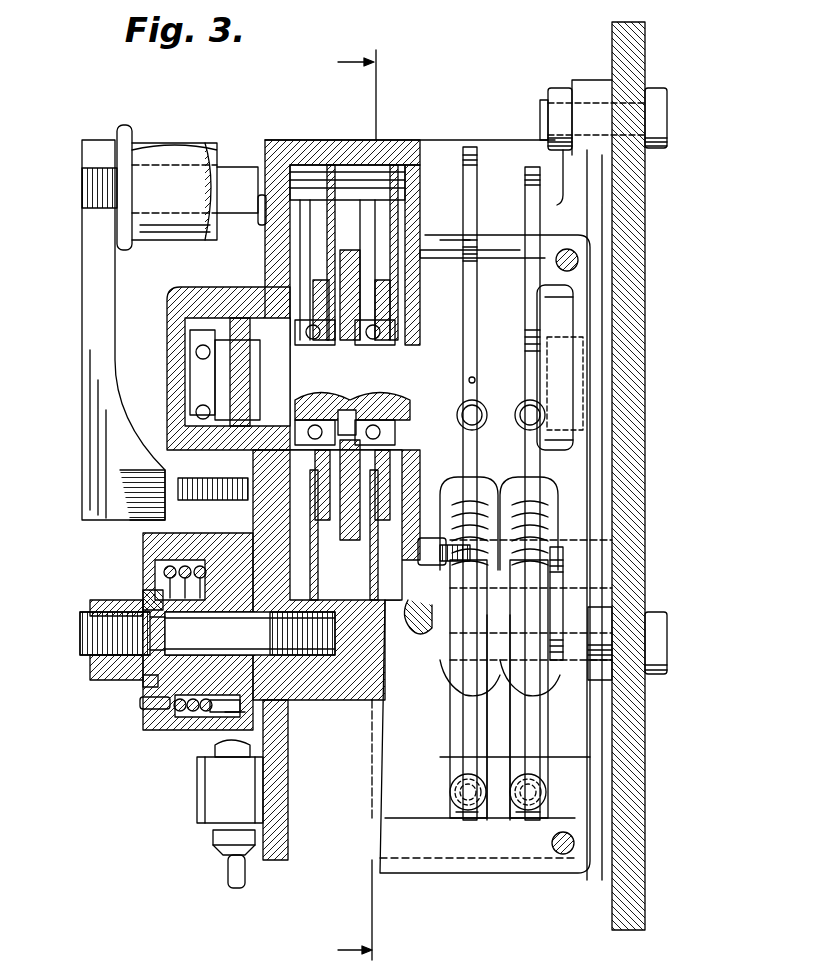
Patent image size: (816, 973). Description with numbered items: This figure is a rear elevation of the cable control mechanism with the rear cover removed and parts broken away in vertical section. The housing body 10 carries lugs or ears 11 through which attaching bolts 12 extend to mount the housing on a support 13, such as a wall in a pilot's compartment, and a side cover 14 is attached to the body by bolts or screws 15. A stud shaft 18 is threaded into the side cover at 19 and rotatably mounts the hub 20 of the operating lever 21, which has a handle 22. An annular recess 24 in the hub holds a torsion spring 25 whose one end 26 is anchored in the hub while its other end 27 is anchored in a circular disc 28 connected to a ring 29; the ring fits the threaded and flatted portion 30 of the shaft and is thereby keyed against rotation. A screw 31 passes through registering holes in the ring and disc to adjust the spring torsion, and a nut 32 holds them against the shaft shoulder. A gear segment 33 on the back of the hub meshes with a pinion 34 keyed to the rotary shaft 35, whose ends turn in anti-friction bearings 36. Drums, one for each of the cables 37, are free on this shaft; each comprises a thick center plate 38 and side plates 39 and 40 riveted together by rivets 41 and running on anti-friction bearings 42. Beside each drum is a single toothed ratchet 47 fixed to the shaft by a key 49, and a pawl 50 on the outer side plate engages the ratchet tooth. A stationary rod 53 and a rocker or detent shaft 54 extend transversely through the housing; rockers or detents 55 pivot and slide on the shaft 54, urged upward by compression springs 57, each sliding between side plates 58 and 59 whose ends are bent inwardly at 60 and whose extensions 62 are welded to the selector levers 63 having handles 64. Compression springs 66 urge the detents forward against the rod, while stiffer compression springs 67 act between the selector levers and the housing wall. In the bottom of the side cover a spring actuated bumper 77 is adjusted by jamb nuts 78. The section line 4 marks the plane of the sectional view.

The section line 4- 4 is at (357, 503).
The housing body 10 is at (436, 138).
The lugs or ears 11 is at (585, 88).
The attaching bolts 12 is at (660, 115).
The support 13 is at (645, 222).
The side cover 14 is at (283, 140).
The bolts or screws 15 is at (260, 196).
The stud shaft 18 is at (207, 633).
The threaded connection 19 is at (300, 672).
The hub 20 is at (195, 725).
The operating lever 21 is at (100, 378).
The handle 22 is at (185, 150).
The annular recess 24 is at (170, 560).
The torsion spring 25 is at (175, 715).
The end of torsion spring 26 is at (215, 735).
The other end of torsion spring 27 is at (140, 703).
The circular disc 28 is at (150, 572).
The ring 29 is at (155, 597).
The flatted portion 30 is at (85, 655).
The screw 31 is at (145, 685).
The nut 32 is at (110, 672).
The gear segment 33 is at (175, 478).
The pinion 34 is at (237, 315).
The rotary shaft 35 is at (230, 378).
The anti-friction bearings 36 is at (195, 345).
The cables 37 is at (320, 497).
The center plate 38 is at (323, 282).
The side plate 39 is at (318, 200).
The side plate 40 is at (343, 165).
The rivets 41 is at (295, 430).
The anti-friction bearings 42 is at (313, 340).
The single toothed ratchet 47 is at (362, 345).
The key 49 is at (345, 410).
The pawl 50 is at (545, 360).
The stationary rod 53 is at (420, 552).
The rocker or detent shaft 54 is at (425, 618).
The rockers or detents 55 is at (562, 582).
The compression springs 57 is at (560, 530).
The side plate 58 is at (540, 492).
The side plate 59 is at (555, 512).
The inwardly bent ends 60 is at (490, 692).
The extensions 62 is at (520, 732).
The selector levers 63 is at (560, 765).
The handles 64 is at (530, 200).
The compression springs 66 is at (550, 413).
The compression springs 67 is at (470, 818).
The spring actuated bumper 77 is at (250, 748).
The jamb nuts 78 is at (218, 852).